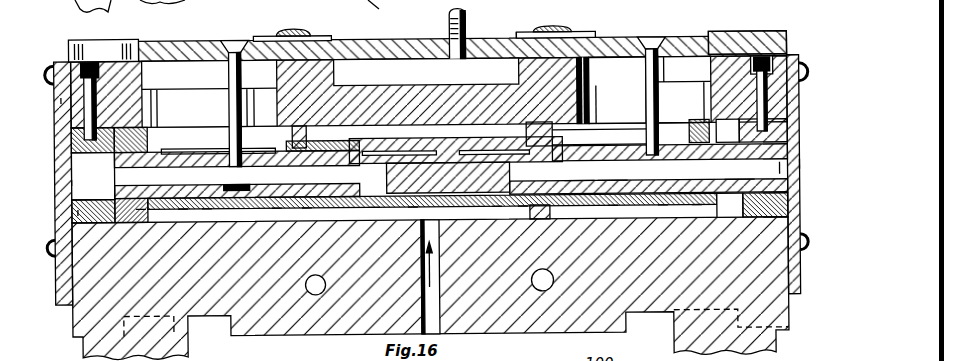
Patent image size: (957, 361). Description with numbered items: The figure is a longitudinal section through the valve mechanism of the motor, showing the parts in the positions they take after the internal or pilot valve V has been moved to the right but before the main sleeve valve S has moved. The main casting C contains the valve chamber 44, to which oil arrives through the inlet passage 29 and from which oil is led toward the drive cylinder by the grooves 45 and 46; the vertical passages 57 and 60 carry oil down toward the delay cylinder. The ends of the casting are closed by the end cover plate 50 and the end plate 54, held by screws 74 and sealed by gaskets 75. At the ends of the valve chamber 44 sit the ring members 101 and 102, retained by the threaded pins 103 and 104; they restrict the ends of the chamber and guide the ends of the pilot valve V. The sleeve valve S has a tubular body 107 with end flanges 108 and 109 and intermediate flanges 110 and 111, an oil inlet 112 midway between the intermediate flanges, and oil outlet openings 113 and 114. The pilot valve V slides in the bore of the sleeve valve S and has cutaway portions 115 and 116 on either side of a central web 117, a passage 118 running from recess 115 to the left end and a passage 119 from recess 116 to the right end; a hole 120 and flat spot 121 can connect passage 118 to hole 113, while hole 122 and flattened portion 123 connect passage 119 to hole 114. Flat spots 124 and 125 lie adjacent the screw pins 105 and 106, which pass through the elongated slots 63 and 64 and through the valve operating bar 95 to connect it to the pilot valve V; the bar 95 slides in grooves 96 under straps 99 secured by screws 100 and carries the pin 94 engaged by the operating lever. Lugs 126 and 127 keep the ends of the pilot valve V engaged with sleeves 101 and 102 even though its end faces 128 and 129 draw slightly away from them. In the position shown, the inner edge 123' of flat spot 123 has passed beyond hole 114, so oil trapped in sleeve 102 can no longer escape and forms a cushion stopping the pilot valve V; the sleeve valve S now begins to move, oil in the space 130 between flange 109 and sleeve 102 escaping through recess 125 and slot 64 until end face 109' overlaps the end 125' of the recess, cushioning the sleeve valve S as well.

The inlet passage 29 is at (437, 298).
The valve chamber 44 is at (72, 183).
The groove 45 is at (318, 122).
The groove 46 is at (548, 120).
The end cover plate 50 is at (62, 100).
The end plate 54 is at (800, 170).
The vertical passage 57 is at (313, 294).
The vertical passage 60 is at (543, 287).
The elongated slot 63 is at (163, 107).
The elongated slot 64 is at (608, 97).
The screw 74 is at (56, 68).
The gasket 75 is at (70, 308).
The pin 94 is at (467, 28).
The valve operating bar 95 is at (518, 40).
The groove 96 is at (100, 52).
The strap 99 is at (318, 40).
The screw 100 is at (293, 31).
The ring member 101 is at (78, 213).
The ring member 102 is at (762, 113).
The pin 103 is at (86, 112).
The pin 104 is at (790, 60).
The screw pin 105 is at (231, 90).
The screw pin 106 is at (652, 70).
The tubular body 107 is at (183, 203).
The end flange 108 is at (140, 213).
The end flange 109 is at (706, 188).
The end face 109' is at (713, 222).
The intermediate flange 110 is at (307, 213).
The intermediate flange 111 is at (523, 207).
The oil inlet 112 is at (413, 207).
The oil outlet opening 113 is at (207, 203).
The oil outlet opening 114 is at (613, 210).
The cutaway portion 115 is at (375, 205).
The cutaway portion 116 is at (497, 207).
The central web 117 is at (447, 203).
The passage 118 is at (236, 180).
The passage 119 is at (663, 203).
The hole 120 is at (253, 194).
The flat spot 121 is at (233, 193).
The hole 122 is at (672, 186).
The flattened portion 123 is at (609, 178).
The inner edge 123' is at (576, 178).
The flat spot 124 is at (183, 150).
The recess 125 is at (685, 118).
The end of recess 125' is at (739, 175).
The lug 126 is at (93, 175).
The lug 127 is at (782, 175).
The end face 128 is at (113, 187).
The end face 129 is at (742, 216).
The space 130 is at (727, 224).
The main pump casting C is at (730, 72).
The sleeve valve S is at (242, 203).
The pilot valve V is at (277, 207).